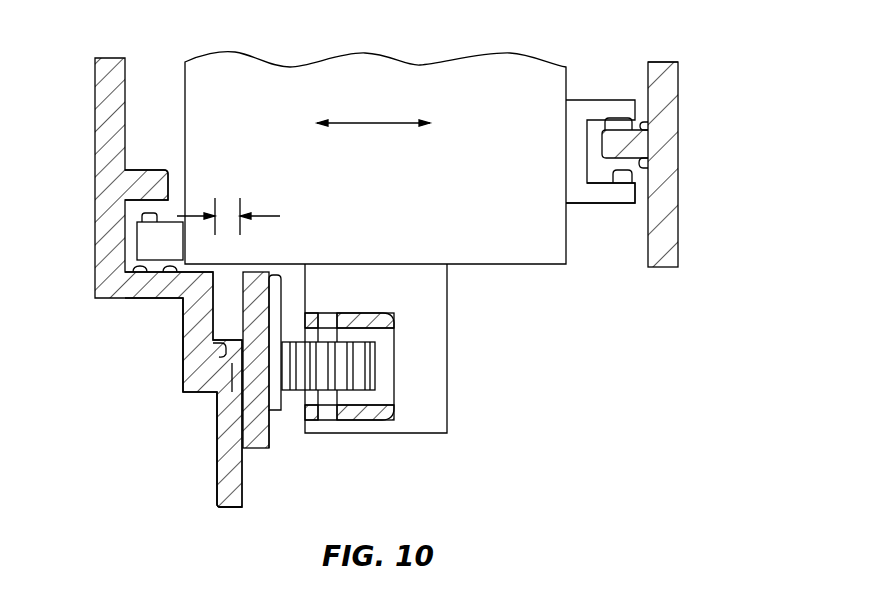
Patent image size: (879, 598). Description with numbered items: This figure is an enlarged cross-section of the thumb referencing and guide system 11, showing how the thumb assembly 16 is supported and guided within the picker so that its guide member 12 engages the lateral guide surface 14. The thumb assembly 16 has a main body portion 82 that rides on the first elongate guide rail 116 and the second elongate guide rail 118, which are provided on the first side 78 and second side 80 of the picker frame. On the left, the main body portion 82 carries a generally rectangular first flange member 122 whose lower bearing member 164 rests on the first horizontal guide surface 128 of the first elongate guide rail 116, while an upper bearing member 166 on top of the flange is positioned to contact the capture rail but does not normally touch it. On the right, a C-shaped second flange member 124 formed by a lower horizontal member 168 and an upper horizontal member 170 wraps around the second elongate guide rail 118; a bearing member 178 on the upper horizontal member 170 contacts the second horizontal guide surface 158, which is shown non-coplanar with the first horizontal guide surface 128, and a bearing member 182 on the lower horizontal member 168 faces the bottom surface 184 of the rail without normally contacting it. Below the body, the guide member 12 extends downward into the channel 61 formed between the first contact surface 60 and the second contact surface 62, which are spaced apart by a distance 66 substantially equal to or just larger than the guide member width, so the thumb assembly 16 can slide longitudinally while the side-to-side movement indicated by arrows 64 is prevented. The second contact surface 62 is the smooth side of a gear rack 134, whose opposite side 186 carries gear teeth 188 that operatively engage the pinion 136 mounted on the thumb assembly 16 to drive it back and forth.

The thumb referencing and guide system 11 is at (262, 252).
The guide member 12 is at (185, 300).
The lateral guide surface 14 is at (178, 355).
The thumb assembly 16 is at (336, 48).
The first contact surface 60 is at (220, 363).
The channel 61 is at (210, 355).
The second contact surface 62 is at (232, 395).
The arrows 64 is at (375, 123).
The distance 66 is at (228, 197).
The first side 78 is at (96, 103).
The second side 80 is at (668, 60).
The main body portion 82 is at (474, 217).
The first elongate guide rail 116 is at (176, 177).
The second elongate guide rail 118 is at (592, 147).
The first flange member 122 is at (134, 260).
The second flange member 124 is at (586, 90).
The first horizontal guide surface 128 is at (165, 275).
The gear rack 134 is at (260, 450).
The pinion 136 is at (378, 366).
The second horizontal guide surface 158 is at (644, 125).
The lower bearing member 164 is at (133, 274).
The upper bearing member 166 is at (150, 213).
The lower horizontal member 168 is at (628, 205).
The upper horizontal member 170 is at (657, 75).
The bearing member 178 is at (607, 117).
The bearing member 182 is at (630, 180).
The bottom surface 184 is at (641, 167).
The opposite side 186 is at (278, 440).
The gear teeth 188 is at (283, 405).